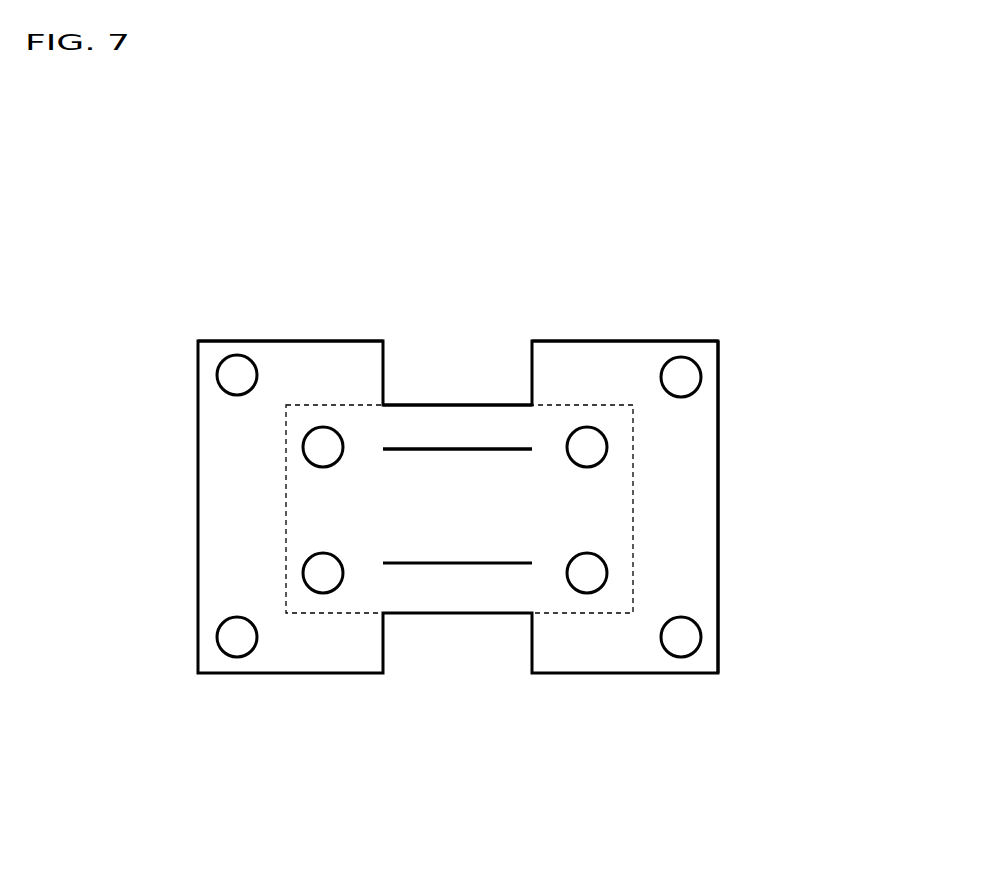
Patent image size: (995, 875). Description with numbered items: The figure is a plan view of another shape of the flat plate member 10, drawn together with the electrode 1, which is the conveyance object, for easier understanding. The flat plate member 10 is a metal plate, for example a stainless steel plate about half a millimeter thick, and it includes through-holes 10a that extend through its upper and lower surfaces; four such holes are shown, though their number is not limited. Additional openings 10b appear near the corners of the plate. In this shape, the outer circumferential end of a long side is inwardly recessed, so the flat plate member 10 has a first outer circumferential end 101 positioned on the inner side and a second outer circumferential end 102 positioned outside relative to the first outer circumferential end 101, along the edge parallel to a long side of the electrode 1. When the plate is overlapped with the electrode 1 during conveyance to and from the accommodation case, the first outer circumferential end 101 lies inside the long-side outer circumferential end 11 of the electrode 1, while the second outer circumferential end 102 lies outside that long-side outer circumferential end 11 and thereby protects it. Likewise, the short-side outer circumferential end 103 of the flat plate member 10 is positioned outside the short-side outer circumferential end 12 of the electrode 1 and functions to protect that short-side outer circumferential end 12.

The electrode 1 is at (513, 402).
The flat plate member 10 is at (706, 338).
The through-holes 10a is at (323, 427).
The through holes 10b is at (237, 355).
The long-side outer circumferential end 11 is at (481, 403).
The short-side outer circumferential end 12 is at (634, 492).
The first outer circumferential end 101 is at (432, 447).
The second outer circumferential end 102 is at (288, 340).
The short-side outer circumferential end 103 is at (719, 567).